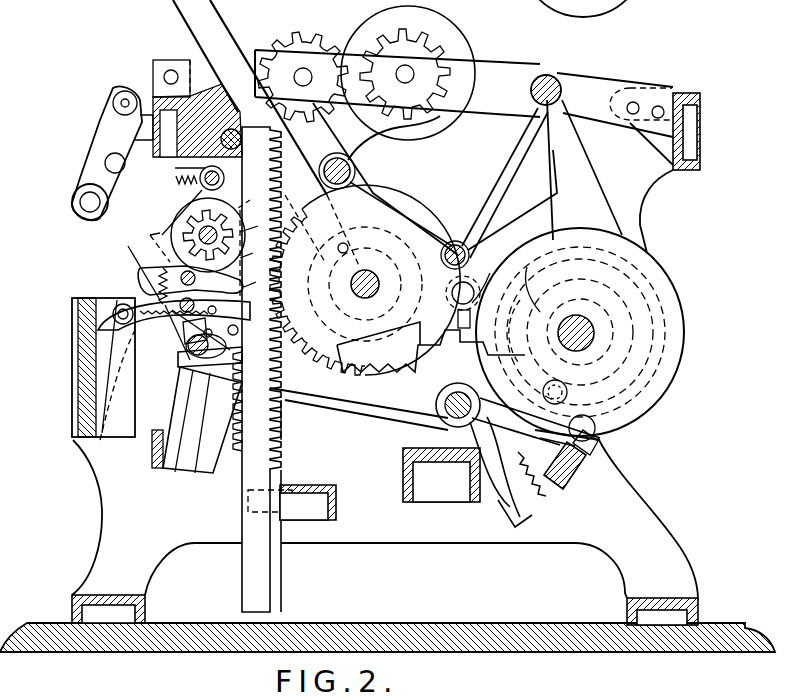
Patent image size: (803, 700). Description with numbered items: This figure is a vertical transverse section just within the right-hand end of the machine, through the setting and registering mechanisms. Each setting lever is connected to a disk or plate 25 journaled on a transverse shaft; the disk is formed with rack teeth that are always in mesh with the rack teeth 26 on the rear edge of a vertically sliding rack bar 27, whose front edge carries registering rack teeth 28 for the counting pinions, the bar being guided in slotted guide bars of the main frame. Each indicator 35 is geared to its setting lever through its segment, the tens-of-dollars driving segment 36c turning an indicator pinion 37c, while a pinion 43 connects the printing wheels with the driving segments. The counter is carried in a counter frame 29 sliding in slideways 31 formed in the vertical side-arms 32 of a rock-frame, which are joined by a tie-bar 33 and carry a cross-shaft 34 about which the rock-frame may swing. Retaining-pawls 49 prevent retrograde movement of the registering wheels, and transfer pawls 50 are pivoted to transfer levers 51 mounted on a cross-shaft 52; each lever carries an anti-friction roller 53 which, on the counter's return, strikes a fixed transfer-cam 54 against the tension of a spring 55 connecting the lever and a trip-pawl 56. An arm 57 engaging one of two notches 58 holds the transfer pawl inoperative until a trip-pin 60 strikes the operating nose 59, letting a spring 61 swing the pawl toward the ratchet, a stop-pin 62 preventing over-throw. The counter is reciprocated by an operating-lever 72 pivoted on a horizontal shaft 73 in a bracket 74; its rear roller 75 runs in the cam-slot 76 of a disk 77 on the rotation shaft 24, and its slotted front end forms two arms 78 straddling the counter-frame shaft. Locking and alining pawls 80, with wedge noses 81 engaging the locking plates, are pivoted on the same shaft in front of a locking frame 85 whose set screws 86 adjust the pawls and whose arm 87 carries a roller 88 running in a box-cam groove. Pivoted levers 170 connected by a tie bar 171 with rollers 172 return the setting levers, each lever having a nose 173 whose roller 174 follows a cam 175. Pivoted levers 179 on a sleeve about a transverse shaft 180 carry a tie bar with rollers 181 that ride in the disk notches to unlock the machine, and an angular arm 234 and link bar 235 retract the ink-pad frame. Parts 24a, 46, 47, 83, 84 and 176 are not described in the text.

The rotation shaft 24 is at (185, 15).
The pivot pin 24a is at (382, 287).
The disk or plate 25 is at (326, 291).
The rack teeth 26 is at (282, 420).
The rack bar 27 is at (250, 180).
The registering rack teeth 28 is at (202, 431).
The counter frame 29 is at (128, 247).
The slideway or channel 31 is at (230, 127).
The vertical side-arm 32 is at (179, 432).
The tie-bar 33 is at (103, 379).
The cross-shaft 34 is at (180, 419).
The indicator 35 is at (466, 46).
The tens-of-dollars driving segment 36c is at (335, 164).
The indicator pinion 37c is at (392, 36).
The pinion 43 is at (307, 34).
The plate 46 is at (196, 232).
The pinion 47 is at (208, 235).
The retaining-pawl 49 is at (200, 186).
The transfer pawl 50 is at (195, 258).
The transfer lever 51 is at (182, 317).
The cross-shaft 52 is at (186, 345).
The anti-friction roller 53 is at (122, 305).
The transfer-cam or projection 54 is at (185, 376).
The spring 55 is at (153, 283).
The trip-pawl 56 is at (190, 280).
The arm 57 is at (253, 249).
The notch 58 is at (256, 223).
The operating nose 59 is at (257, 279).
The trip-pin or projection 60 is at (250, 196).
The spring 61 is at (180, 322).
The stop-pin 62 is at (225, 338).
The operating-lever 72 is at (335, 362).
The horizontal shaft 73 is at (444, 407).
The bracket 74 is at (438, 430).
The anti-friction roller 75 is at (600, 440).
The cam-slot 76 is at (195, 395).
The disk 77 is at (667, 372).
The arm 78 is at (178, 362).
The locking and alining pawl 80 is at (516, 523).
The nose 81 is at (345, 400).
The cam track 83 is at (652, 318).
The block 84 is at (440, 500).
The locking frame 85 is at (572, 478).
The set screw 86 is at (607, 442).
The arm 87 is at (536, 427).
The anti-friction roller 88 is at (569, 394).
The pivoted lever 170 is at (370, 178).
The tie bar 171 is at (358, 166).
The anti-friction roller 172 is at (354, 148).
The nose 173 is at (460, 329).
The anti-friction roller 174 is at (490, 273).
The cam 175 is at (527, 267).
The arm 176 is at (412, 218).
The pivoted lever 179 is at (588, 111).
The transverse shaft 180 is at (549, 74).
The anti-friction roller 181 is at (466, 252).
The angular arm 234 is at (112, 138).
The link bar 235 is at (88, 185).